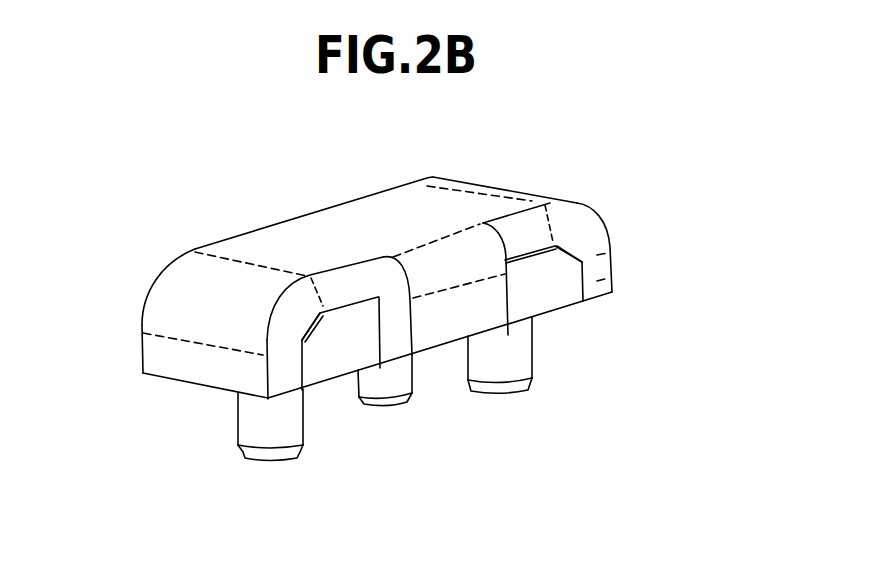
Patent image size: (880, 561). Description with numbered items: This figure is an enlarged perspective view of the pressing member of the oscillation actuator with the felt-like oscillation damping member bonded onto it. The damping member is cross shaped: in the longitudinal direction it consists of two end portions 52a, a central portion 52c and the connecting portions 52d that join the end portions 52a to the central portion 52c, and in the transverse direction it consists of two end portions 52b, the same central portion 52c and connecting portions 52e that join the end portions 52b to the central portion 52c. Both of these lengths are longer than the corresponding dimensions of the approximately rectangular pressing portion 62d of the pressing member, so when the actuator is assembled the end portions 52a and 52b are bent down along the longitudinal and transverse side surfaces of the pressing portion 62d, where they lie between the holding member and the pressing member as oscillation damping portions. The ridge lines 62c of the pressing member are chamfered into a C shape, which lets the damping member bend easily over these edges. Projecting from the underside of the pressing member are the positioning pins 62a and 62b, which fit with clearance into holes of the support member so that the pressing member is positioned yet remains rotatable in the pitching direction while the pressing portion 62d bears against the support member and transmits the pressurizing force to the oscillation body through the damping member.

The end portion 52a is at (265, 370).
The end portion 52b is at (400, 330).
The central portion 52c is at (366, 227).
The connecting portion 52d is at (181, 293).
The connecting portion 52e is at (308, 211).
The positioning pin 62a is at (270, 428).
The positioning pin 62b is at (381, 378).
The ridge line 62c is at (310, 335).
The pressing portion 62d is at (541, 297).